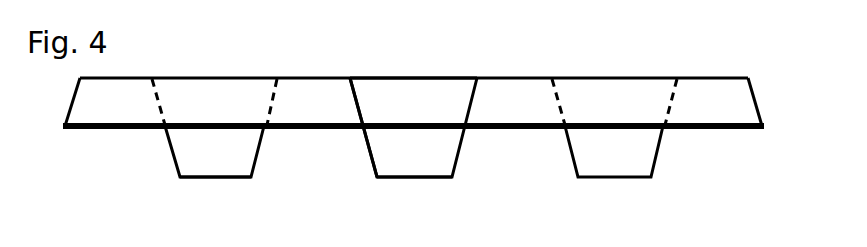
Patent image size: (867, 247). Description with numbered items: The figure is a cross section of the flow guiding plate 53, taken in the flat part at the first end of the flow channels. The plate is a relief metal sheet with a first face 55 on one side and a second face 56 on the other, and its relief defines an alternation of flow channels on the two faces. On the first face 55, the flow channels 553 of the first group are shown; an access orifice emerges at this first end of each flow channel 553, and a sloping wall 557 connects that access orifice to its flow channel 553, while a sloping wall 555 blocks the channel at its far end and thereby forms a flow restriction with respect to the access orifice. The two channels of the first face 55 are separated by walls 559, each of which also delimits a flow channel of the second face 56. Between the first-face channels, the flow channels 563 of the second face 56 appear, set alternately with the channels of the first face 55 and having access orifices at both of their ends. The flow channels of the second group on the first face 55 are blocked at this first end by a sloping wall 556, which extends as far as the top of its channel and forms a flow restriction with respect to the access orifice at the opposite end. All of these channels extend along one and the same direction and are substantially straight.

The flow guiding plate 53 is at (413, 132).
The first face 55 is at (218, 77).
The second face 56 is at (214, 178).
The flow channel 553 is at (395, 106).
The sloping wall 555 is at (418, 77).
The sloping wall 556 is at (192, 166).
The sloping wall 557 is at (395, 166).
The wall 559 is at (363, 99).
The flow channel 563 is at (294, 166).